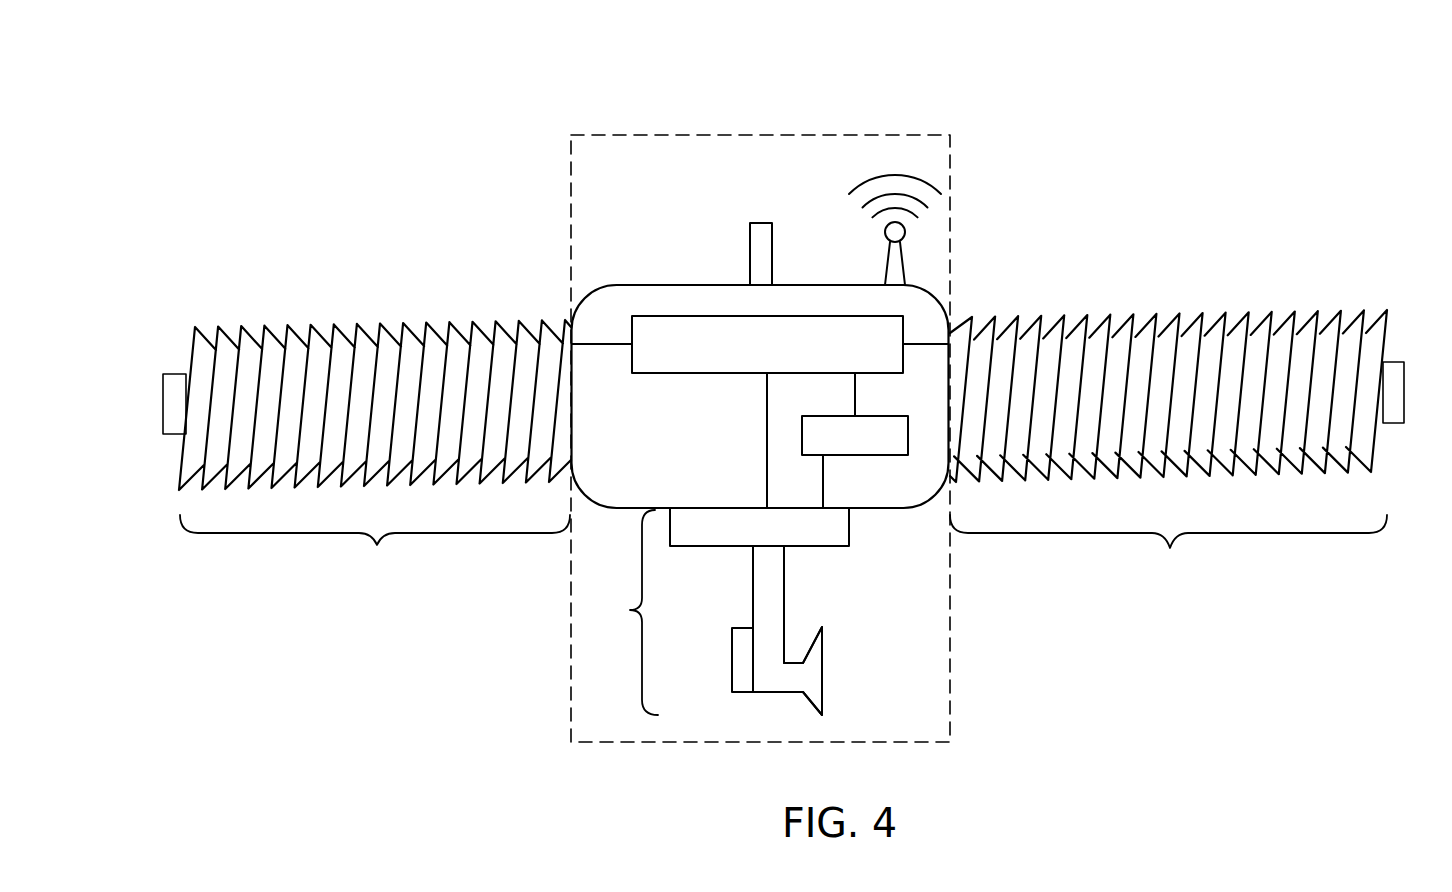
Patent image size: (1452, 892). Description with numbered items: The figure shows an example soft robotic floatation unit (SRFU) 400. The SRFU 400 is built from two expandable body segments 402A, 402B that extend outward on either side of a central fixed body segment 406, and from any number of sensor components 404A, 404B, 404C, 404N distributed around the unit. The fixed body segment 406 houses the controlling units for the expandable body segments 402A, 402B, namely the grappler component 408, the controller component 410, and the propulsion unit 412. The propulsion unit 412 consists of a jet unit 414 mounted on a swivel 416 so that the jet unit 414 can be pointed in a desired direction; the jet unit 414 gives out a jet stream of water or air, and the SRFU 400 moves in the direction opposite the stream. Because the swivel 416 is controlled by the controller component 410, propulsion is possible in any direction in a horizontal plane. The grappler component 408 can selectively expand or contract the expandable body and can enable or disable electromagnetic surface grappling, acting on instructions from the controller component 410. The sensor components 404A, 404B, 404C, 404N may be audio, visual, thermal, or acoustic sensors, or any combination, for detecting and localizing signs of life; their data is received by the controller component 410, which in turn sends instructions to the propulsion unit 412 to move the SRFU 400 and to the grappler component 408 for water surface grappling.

The soft robotic floatation unit 400 is at (262, 115).
The expandable body segment 402A is at (375, 450).
The expandable body segment 402B is at (1168, 446).
The sensor component 404A is at (750, 233).
The sensor component 404B is at (167, 372).
The sensor component 404C is at (732, 648).
The sensor component 404N is at (1398, 425).
The fixed body segment 406 is at (645, 135).
The grappler component 408 is at (795, 358).
The controller component 410 is at (832, 451).
The propulsion unit 412 is at (622, 612).
The jet unit 414 is at (822, 678).
The swivel 416 is at (849, 548).